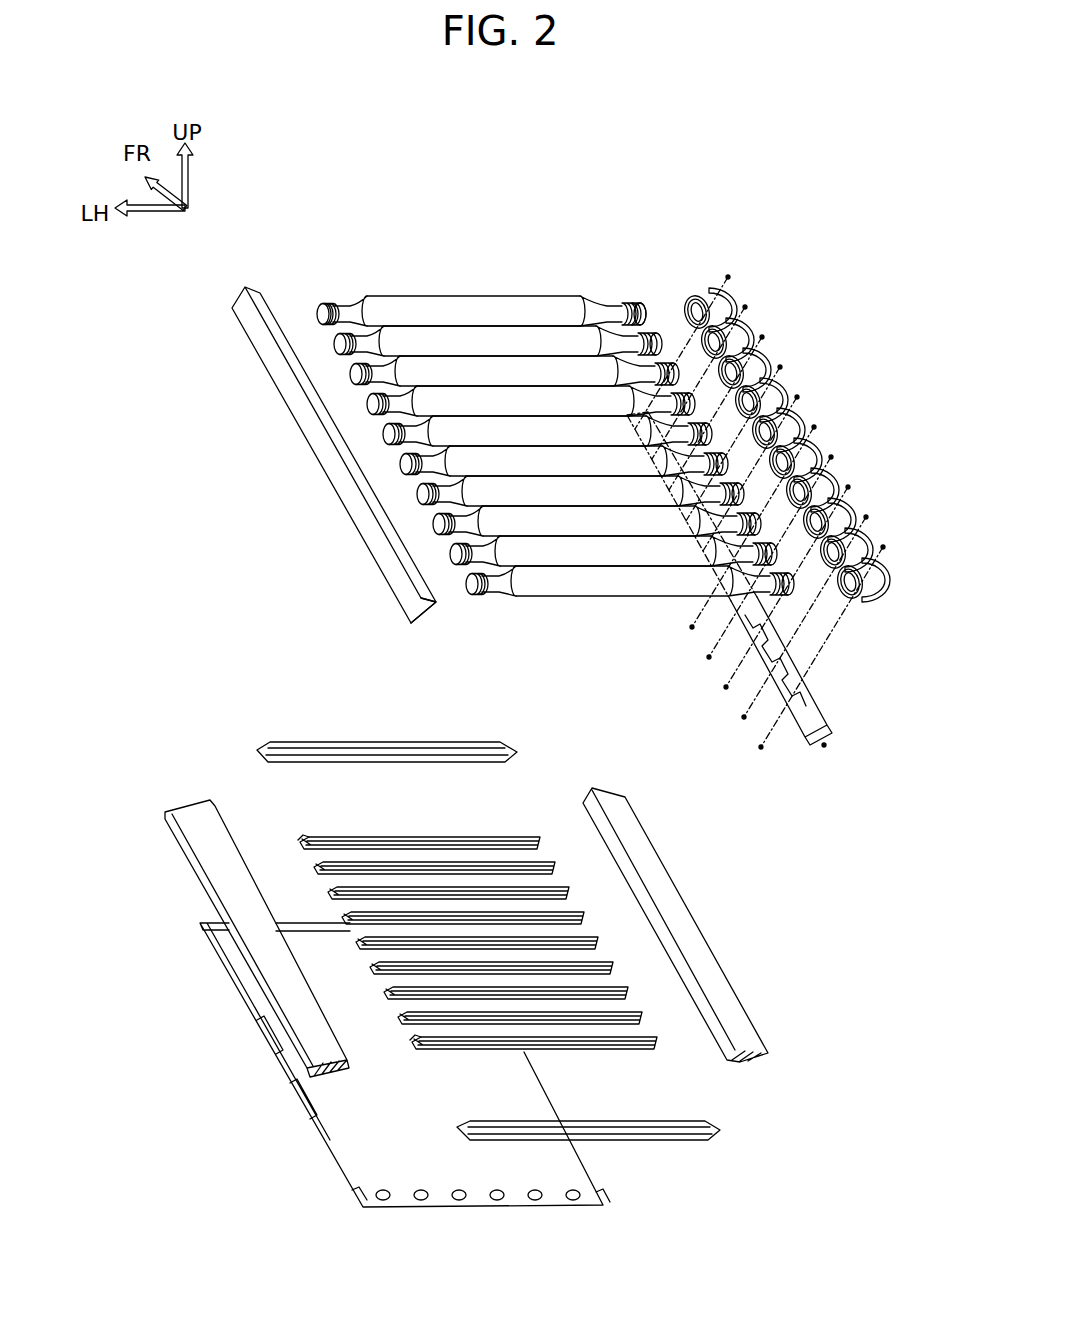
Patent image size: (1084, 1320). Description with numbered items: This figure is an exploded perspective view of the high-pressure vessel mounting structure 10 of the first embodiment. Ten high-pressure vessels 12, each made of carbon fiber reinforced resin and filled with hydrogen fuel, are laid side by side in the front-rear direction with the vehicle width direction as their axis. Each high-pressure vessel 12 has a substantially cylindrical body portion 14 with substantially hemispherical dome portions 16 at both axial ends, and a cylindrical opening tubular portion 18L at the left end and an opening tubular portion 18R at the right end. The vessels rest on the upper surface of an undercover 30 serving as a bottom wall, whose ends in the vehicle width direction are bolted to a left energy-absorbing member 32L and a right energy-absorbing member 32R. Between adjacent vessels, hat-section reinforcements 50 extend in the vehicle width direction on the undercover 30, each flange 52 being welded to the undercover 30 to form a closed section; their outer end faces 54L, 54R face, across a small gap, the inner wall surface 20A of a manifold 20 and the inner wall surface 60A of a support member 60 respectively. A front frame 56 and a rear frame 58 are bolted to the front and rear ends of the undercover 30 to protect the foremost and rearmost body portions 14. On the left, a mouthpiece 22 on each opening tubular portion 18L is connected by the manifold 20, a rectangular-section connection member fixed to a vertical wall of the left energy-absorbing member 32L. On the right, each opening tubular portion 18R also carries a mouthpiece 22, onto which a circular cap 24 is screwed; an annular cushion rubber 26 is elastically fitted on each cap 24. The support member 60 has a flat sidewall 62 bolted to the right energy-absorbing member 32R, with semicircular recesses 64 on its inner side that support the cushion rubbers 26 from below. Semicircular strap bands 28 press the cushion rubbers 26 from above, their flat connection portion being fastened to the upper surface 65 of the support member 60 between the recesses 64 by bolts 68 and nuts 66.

The high-pressure vessel mounting structure 10 is at (819, 365).
The high-pressure vessel 12 is at (443, 290).
The body portion 14 is at (590, 587).
The dome portion 16 is at (370, 292).
The opening tubular portion 18L is at (335, 300).
The opening tubular portion 18R is at (623, 310).
The mouthpiece 22 is at (320, 306).
The cap 24 is at (646, 299).
The cushion rubber 26 is at (700, 296).
The strap band 28 is at (740, 298).
The manifold 20 is at (330, 462).
The inner wall surface 20A is at (428, 612).
The support member 60 is at (826, 742).
The inner wall surface 60A is at (730, 606).
The sidewall 62 is at (823, 708).
The recess 64 is at (778, 714).
The upper surface 65 is at (755, 746).
The nut 66 is at (826, 748).
The bolt 68 is at (902, 575).
The undercover 30 is at (313, 1143).
The left energy-absorbing member 32L is at (203, 885).
The right energy-absorbing member 32R is at (697, 927).
The reinforcement 50 is at (457, 834).
The flange 52 is at (303, 836).
The outer end face 54L is at (413, 1052).
The outer end face 54R is at (543, 835).
The front frame 56 is at (378, 742).
The rear frame 58 is at (637, 1143).